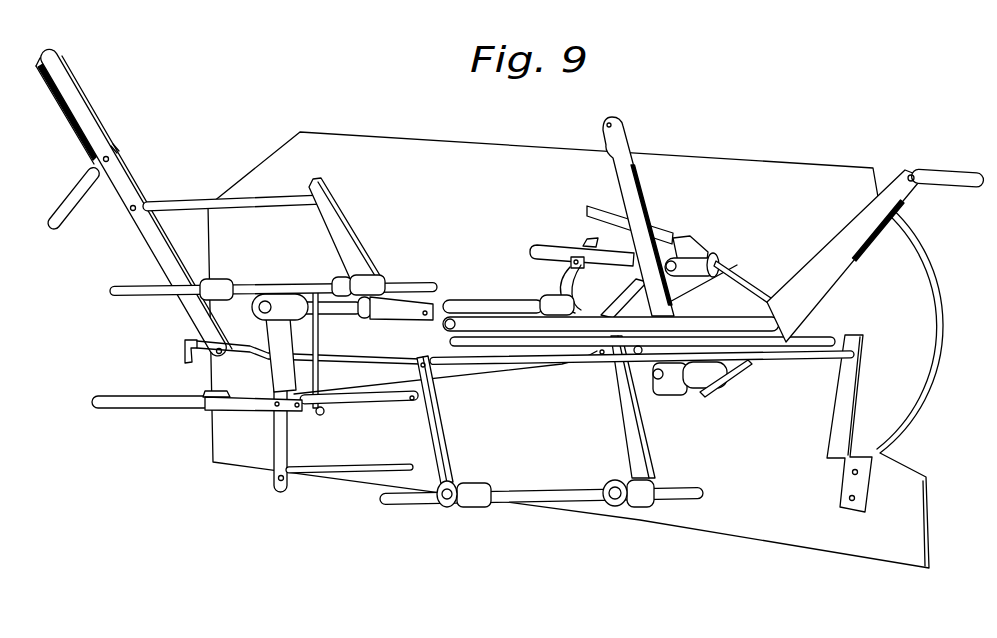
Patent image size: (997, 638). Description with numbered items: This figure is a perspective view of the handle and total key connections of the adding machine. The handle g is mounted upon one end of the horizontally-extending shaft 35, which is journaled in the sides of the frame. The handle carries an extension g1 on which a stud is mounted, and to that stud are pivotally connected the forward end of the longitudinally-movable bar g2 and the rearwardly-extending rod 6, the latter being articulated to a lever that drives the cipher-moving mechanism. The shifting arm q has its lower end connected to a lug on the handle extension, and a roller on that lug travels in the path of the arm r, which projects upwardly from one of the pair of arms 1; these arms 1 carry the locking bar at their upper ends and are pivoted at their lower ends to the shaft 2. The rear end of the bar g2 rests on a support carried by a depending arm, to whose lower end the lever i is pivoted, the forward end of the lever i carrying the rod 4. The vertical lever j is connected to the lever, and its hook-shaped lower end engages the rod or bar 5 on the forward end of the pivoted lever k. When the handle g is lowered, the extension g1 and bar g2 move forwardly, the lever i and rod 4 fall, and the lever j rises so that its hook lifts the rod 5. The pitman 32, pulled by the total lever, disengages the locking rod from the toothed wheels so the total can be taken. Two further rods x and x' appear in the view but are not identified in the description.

The arm r is at (95, 128).
The pitman 32 is at (185, 362).
The vertical lever j is at (315, 333).
The lever i is at (400, 315).
The rod 4 is at (453, 303).
The rod or bar 5 is at (383, 402).
The arms 1 is at (433, 432).
The shaft 2 is at (518, 496).
The shaft 35 is at (527, 333).
The rod 6 is at (593, 205).
The shifting arm q is at (637, 200).
The longitudinally-movable bar g2 is at (607, 266).
The extension g1 is at (730, 283).
The handle g is at (940, 180).
The rod x' is at (644, 330).
The rod x is at (642, 370).